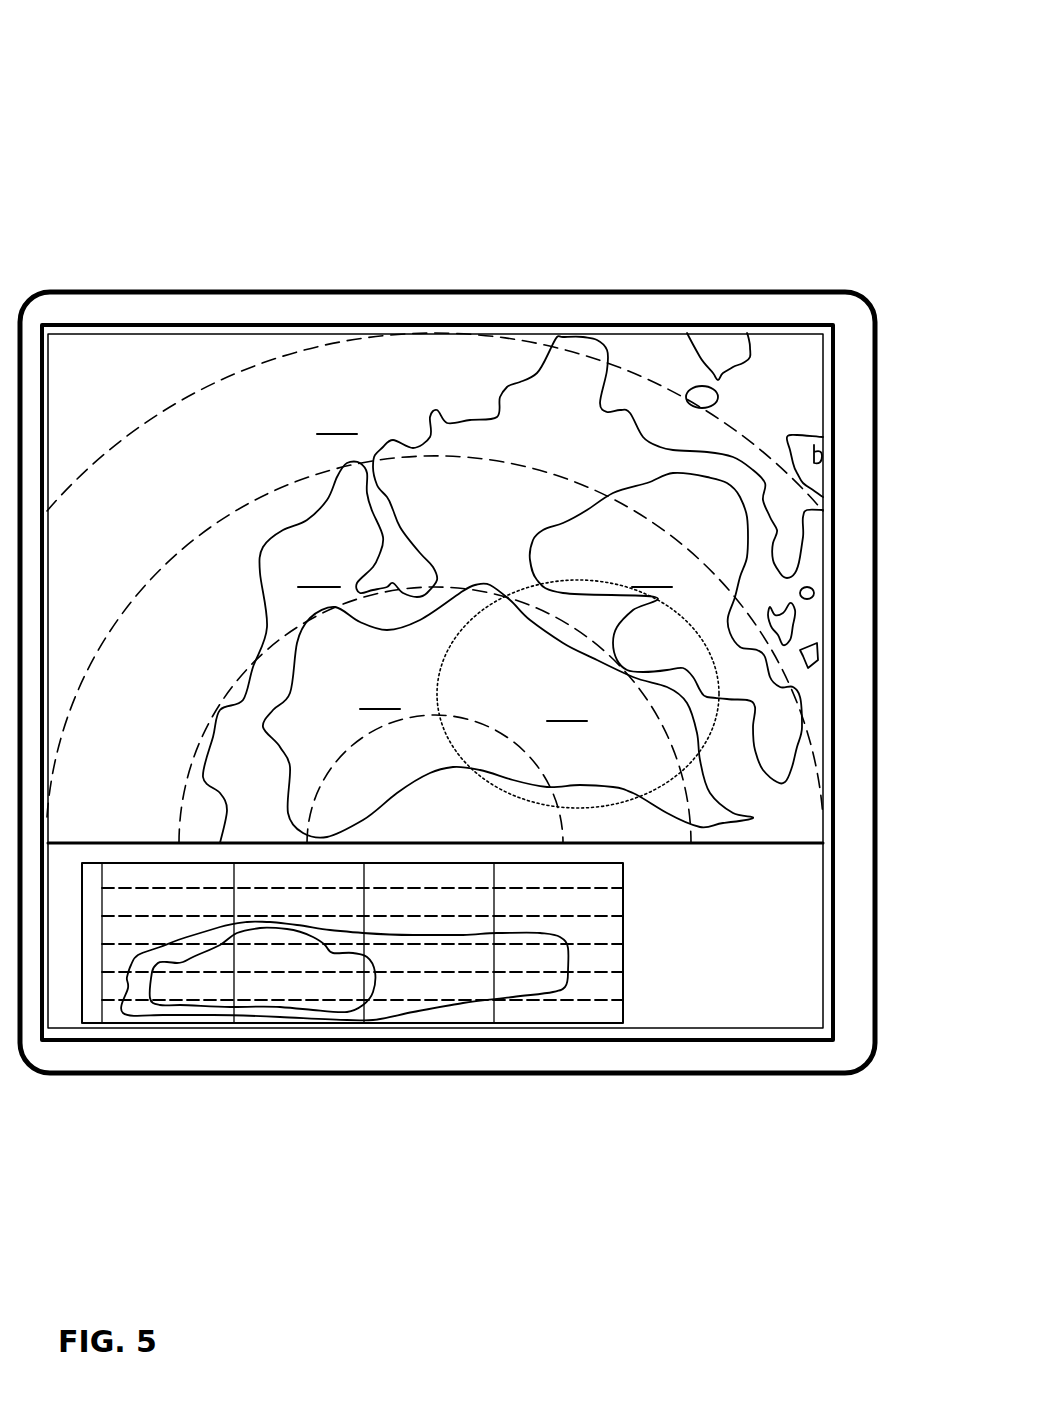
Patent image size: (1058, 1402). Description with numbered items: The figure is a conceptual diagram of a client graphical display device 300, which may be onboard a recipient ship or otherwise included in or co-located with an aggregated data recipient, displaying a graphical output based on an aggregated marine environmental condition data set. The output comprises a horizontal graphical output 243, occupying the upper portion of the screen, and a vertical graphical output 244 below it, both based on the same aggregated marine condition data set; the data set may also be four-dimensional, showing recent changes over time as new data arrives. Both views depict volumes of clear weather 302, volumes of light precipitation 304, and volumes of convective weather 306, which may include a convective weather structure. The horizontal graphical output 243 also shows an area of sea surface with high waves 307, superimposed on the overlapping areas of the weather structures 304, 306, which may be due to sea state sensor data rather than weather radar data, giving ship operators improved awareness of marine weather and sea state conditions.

The client graphical display device 300 is at (447, 584).
The horizontal graphical output 243 is at (491, 436).
The vertical graphical output 244 is at (443, 1092).
The volumes of clear weather 302 is at (435, 730).
The volumes of light precipitation 304 is at (472, 732).
The volumes of convective weather 306 is at (476, 803).
The area of sea surface with high waves 307 is at (578, 694).